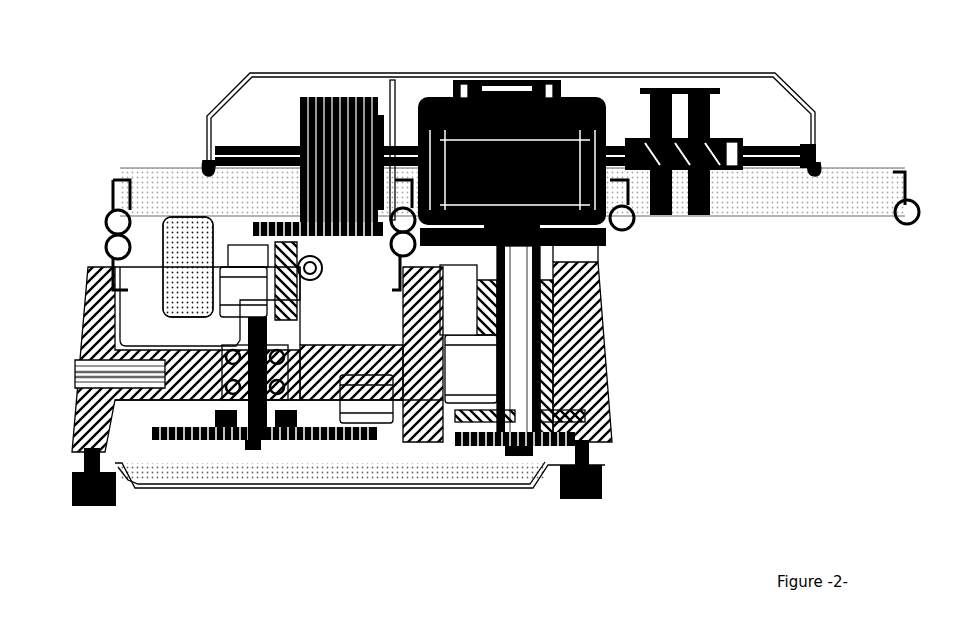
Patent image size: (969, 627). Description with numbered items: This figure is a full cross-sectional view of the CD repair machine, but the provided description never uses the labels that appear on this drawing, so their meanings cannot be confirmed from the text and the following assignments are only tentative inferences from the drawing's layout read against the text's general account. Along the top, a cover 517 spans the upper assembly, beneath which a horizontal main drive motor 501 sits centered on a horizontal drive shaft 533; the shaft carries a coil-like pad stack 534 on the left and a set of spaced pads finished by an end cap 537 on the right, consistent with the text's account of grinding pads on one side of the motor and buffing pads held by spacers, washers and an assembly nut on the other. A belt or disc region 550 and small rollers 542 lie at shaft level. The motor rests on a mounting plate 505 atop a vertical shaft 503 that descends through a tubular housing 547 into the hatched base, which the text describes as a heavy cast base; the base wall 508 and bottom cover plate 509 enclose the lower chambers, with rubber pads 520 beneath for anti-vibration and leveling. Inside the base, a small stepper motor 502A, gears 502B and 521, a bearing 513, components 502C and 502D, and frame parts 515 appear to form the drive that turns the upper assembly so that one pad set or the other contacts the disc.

The motor 501 is at (545, 153).
The motor 502A is at (470, 378).
The motor gear 502B is at (363, 400).
The motor 502C is at (212, 305).
The motor shaft 502D is at (250, 292).
The vertical shaft 503 is at (533, 300).
The mounting plate 505 is at (580, 247).
The base housing 508 is at (80, 422).
The bottom plate 509 is at (214, 496).
The bearing 513 is at (560, 416).
The frame 515 is at (118, 180).
The cover 517 is at (730, 73).
The feet 520 is at (572, 432).
The gear 521 is at (520, 434).
The shaft support 533 is at (662, 215).
The coil 534 is at (300, 110).
The shaft end cap 537 is at (820, 162).
The roller 542 is at (104, 249).
The housing 547 is at (532, 347).
The belt 550 is at (872, 176).